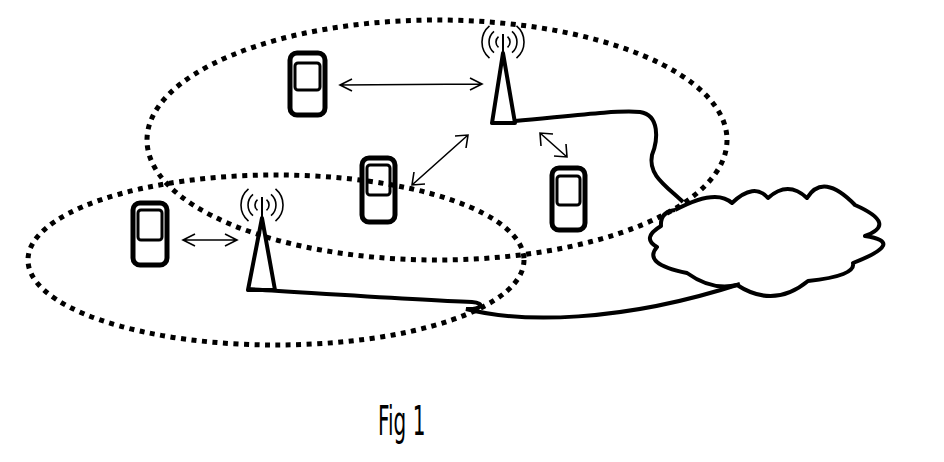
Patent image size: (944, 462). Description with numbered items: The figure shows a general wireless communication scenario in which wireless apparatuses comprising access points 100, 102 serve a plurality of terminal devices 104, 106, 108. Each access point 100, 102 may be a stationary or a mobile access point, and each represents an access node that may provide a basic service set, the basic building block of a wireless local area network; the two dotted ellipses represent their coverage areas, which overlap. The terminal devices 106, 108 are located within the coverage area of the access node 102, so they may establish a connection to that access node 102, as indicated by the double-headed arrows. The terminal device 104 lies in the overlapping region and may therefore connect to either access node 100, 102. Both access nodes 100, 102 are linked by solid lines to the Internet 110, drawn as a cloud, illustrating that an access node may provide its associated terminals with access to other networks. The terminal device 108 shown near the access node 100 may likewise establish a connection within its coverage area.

The access point 100 is at (248, 286).
The access point 102 is at (492, 121).
The terminal device 104 is at (362, 166).
The terminal device 106 is at (552, 176).
The terminal device 108 is at (290, 58).
The Internet 110 is at (766, 242).